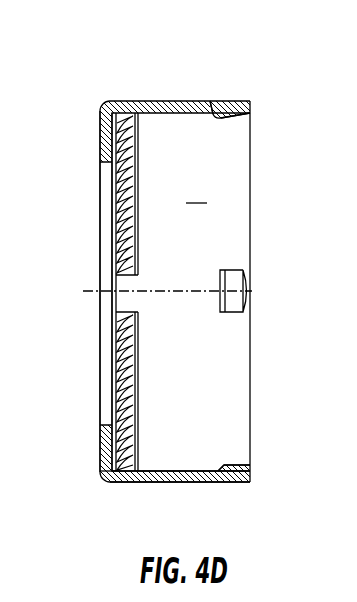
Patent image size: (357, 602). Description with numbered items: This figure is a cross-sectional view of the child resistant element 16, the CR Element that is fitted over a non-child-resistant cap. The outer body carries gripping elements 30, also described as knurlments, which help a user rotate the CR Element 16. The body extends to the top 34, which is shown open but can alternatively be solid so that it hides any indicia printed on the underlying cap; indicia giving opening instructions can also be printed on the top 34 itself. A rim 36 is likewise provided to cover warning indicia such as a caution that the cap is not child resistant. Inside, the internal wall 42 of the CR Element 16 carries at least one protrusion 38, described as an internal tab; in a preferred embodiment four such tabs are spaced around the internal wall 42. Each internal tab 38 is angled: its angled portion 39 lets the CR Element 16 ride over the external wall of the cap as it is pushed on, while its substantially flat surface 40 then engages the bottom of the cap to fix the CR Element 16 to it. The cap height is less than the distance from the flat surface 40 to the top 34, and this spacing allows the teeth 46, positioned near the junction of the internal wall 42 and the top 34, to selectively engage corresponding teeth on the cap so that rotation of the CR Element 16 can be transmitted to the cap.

The child resistant element 16 is at (78, 79).
The gripping elements 30 is at (150, 478).
The top 34 is at (100, 448).
The rim 36 is at (111, 425).
The protrusion 38 is at (241, 101).
The angled portion 39 is at (236, 118).
The flat surface 40 is at (212, 102).
The internal wall 42 is at (196, 192).
The teeth 46 is at (139, 183).